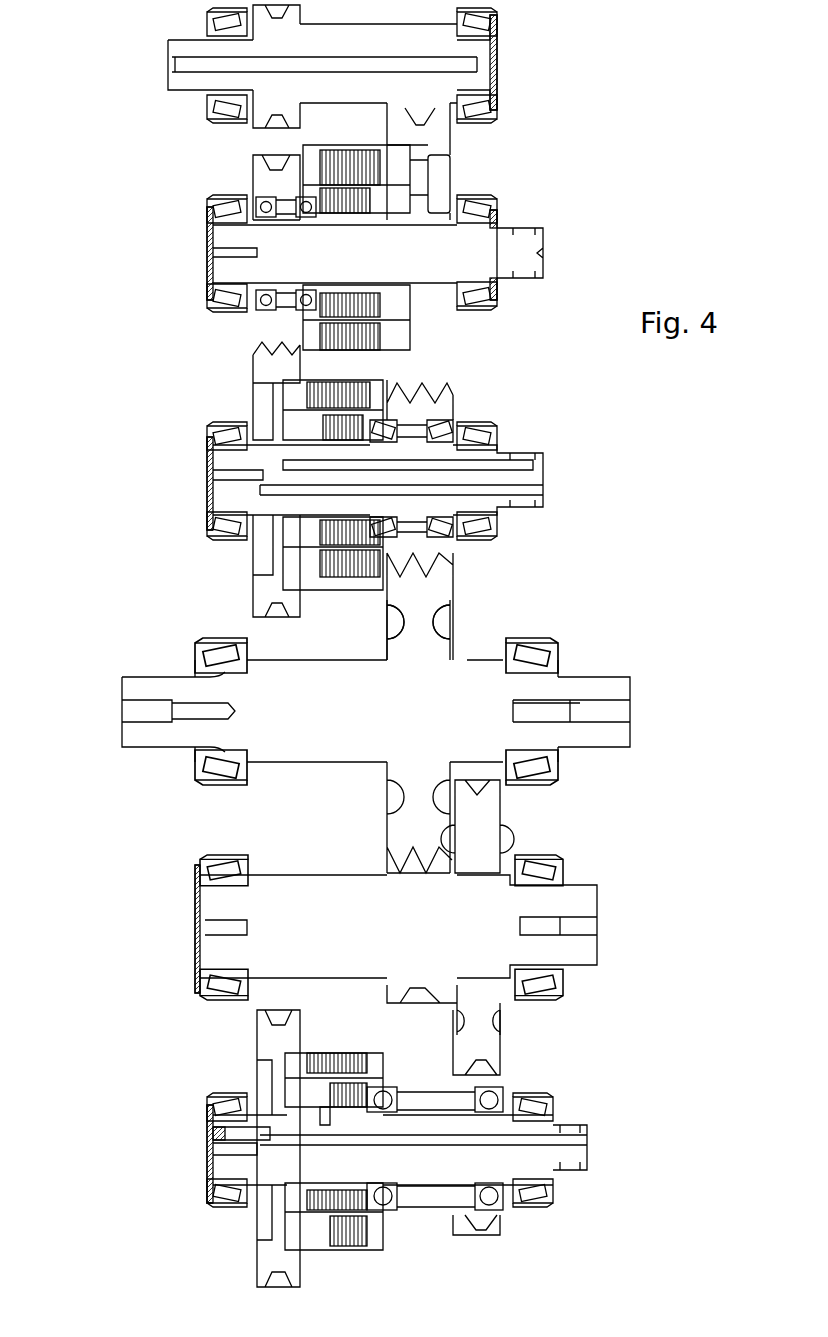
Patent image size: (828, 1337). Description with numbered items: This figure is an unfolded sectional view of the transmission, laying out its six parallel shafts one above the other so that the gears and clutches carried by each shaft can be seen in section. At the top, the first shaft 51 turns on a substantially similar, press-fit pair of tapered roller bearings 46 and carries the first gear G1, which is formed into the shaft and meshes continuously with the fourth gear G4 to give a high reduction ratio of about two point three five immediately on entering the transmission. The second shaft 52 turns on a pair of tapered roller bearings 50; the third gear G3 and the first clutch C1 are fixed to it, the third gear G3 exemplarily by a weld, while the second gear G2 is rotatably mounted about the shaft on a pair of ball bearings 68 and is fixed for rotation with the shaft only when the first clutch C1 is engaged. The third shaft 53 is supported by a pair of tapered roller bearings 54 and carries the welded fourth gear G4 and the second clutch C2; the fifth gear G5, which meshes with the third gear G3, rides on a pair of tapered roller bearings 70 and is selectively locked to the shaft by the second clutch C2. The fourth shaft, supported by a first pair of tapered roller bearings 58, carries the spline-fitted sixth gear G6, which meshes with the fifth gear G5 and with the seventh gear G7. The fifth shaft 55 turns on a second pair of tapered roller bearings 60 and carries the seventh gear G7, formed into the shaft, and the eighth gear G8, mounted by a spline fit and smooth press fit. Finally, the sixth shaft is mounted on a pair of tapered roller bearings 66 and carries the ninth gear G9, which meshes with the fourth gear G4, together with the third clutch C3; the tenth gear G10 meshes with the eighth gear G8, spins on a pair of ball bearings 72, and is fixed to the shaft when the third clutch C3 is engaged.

The first shaft 51 is at (185, 55).
The tapered roller bearings 46 is at (235, 118).
The first gear G1 is at (258, 118).
The first clutch C1 is at (308, 135).
The third gear G3 is at (443, 136).
The second gear G2 is at (256, 179).
The tapered roller bearings 50 is at (232, 212).
The second shaft 52 is at (213, 272).
The ball bearings 68 is at (306, 290).
The fourth gear G4 is at (262, 366).
The fifth gear G5 is at (445, 409).
The third shaft 53 is at (213, 467).
The tapered roller bearings 70 is at (440, 449).
The tapered roller bearings 54 is at (232, 526).
The sixth gear G6 is at (445, 591).
The second clutch C2 is at (355, 581).
The first pair of tapered roller bearings 58 is at (215, 645).
The eighth gear G8 is at (497, 813).
The fifth shaft 55 is at (205, 904).
The second pair of tapered roller bearings 60 is at (215, 858).
The seventh gear G7 is at (390, 991).
The tenth gear G10 is at (500, 1079).
The ball bearings 72 is at (482, 1181).
The tapered roller bearings 66 is at (222, 1201).
The ninth gear G9 is at (262, 1263).
The third clutch C3 is at (345, 1251).